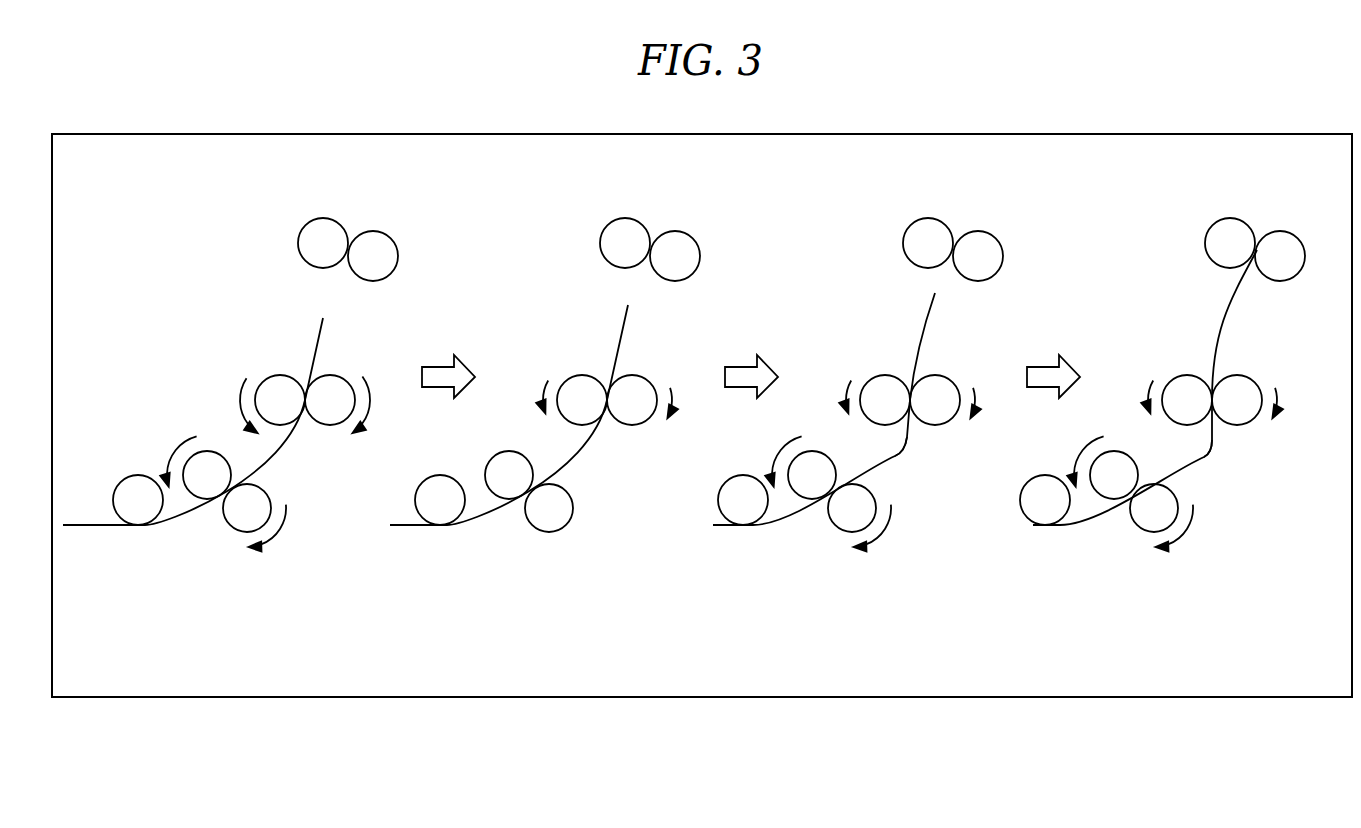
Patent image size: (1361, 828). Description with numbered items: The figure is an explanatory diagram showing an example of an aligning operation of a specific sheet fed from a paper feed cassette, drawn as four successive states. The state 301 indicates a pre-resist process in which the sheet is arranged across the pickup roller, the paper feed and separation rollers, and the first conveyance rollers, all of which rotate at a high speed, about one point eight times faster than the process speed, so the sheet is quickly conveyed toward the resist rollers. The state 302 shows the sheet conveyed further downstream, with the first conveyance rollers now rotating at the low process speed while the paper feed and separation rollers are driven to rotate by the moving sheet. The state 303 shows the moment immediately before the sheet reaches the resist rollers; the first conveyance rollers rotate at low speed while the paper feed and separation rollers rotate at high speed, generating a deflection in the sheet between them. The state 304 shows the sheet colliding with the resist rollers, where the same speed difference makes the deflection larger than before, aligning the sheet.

The state of pre-resist process 301 is at (268, 297).
The conveyance state 302 is at (545, 369).
The conveyance state 303 is at (858, 369).
The conveyance state 304 is at (1162, 369).